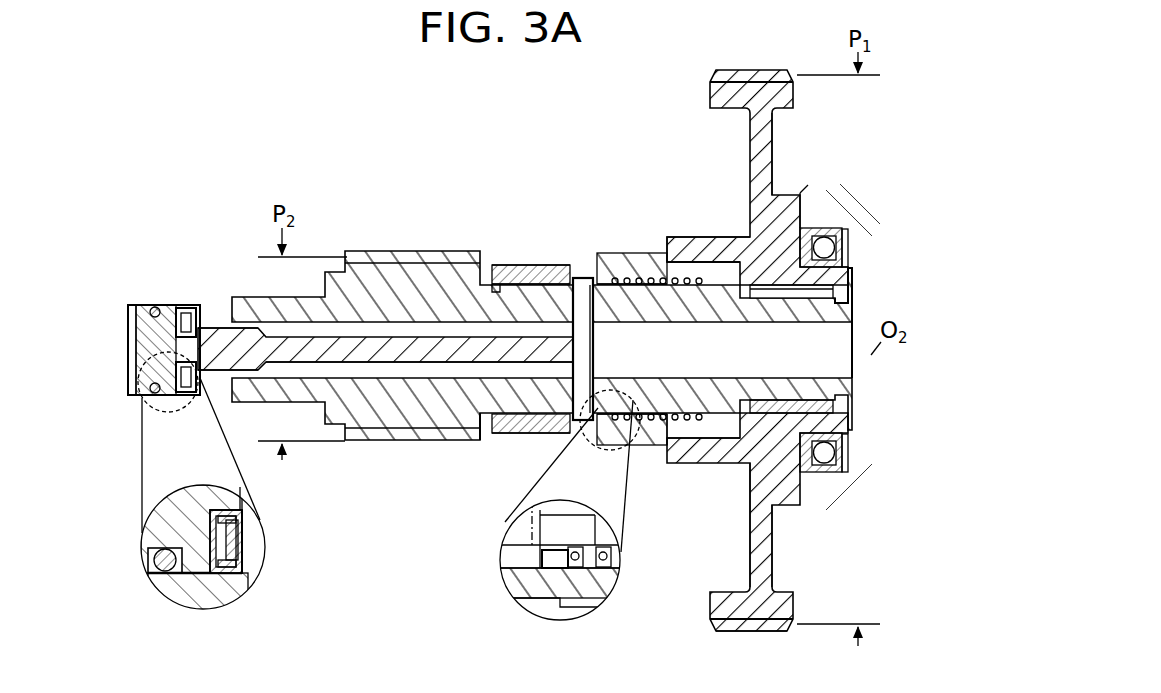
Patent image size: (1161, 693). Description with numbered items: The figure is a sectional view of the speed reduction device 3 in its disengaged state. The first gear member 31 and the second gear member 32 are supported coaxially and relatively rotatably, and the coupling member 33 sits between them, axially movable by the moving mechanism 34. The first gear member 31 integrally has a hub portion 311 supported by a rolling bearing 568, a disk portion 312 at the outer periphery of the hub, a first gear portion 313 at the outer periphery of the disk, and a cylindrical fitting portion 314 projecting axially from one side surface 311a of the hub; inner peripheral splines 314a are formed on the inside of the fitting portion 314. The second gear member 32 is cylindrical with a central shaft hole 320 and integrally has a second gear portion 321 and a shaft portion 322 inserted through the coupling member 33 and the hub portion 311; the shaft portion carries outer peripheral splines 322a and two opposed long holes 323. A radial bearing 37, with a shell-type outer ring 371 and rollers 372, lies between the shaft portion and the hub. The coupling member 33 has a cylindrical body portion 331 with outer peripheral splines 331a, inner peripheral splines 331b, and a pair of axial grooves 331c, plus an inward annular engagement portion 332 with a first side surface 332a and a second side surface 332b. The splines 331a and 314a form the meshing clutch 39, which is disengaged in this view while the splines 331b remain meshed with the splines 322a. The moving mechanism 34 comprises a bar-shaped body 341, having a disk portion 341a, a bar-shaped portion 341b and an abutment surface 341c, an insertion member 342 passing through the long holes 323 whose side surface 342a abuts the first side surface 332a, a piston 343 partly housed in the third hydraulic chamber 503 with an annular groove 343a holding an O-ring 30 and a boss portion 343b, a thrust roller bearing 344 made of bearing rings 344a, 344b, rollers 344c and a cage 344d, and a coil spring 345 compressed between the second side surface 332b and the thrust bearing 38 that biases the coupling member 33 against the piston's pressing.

The speed reduction device 3 is at (214, 186).
The O-ring 30 is at (167, 567).
The first gear member 31 is at (706, 110).
The second gear member 32 is at (428, 249).
The coupling member 33 is at (592, 262).
The moving mechanism 34 is at (241, 397).
The radial bearing 37 is at (864, 350).
The thrust bearing 38 is at (733, 300).
The meshing clutch 39 is at (663, 449).
The hub portion 311 is at (775, 452).
The side surface of hub portion 311a is at (708, 452).
The disk portion 312 is at (765, 545).
The first gear portion 313 is at (775, 624).
The fitting portion 314 is at (696, 243).
The inner peripheral splines 314a is at (712, 257).
The shaft hole 320 is at (856, 372).
The second gear portion 321 is at (422, 251).
The shaft portion 322 is at (853, 292).
The outer peripheral splines 322a is at (510, 414).
The long holes 323 is at (613, 253).
The body portion 331 is at (558, 268).
The outer peripheral splines 331a is at (610, 288).
The inner peripheral splines 331b is at (514, 280).
The axial grooves 331c is at (510, 262).
The engagement portion 332 is at (554, 560).
The first side surface 332a is at (528, 560).
The second side surface 332b is at (583, 566).
The bar-shaped body 341 is at (387, 328).
The disk portion 341a is at (200, 306).
The bar-shaped portion 341b is at (386, 360).
The abutment surface 341c is at (577, 347).
The insertion member 342 is at (597, 252).
The side surface of insertion member 342a is at (545, 530).
The piston 343 is at (131, 355).
The annular groove 343a is at (148, 550).
The boss portion 343b is at (220, 505).
The bearing 344 is at (362, 478).
The bearing ring 344a is at (220, 532).
The bearing ring 344b is at (244, 550).
The rollers 344c is at (228, 542).
The cage 344d is at (244, 560).
The coil spring 345 is at (664, 407).
The shell-type outer ring 371 is at (851, 438).
The rollers 372 is at (851, 413).
The third hydraulic chamber 503 is at (131, 326).
The rolling bearing 568 is at (850, 234).